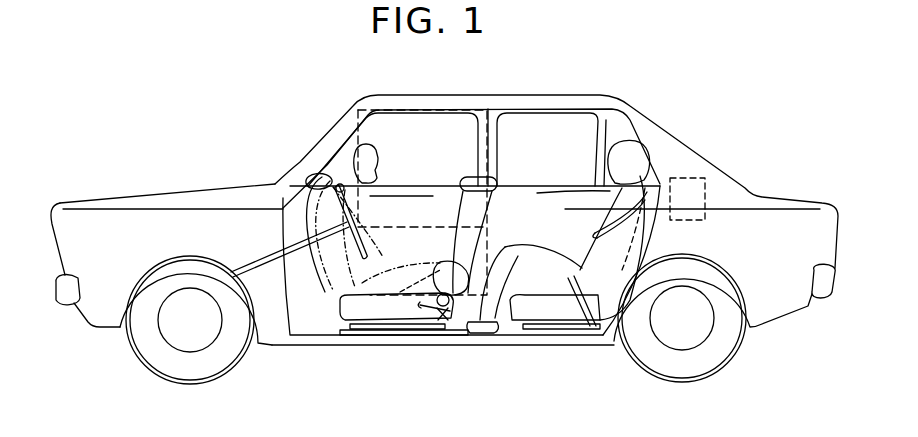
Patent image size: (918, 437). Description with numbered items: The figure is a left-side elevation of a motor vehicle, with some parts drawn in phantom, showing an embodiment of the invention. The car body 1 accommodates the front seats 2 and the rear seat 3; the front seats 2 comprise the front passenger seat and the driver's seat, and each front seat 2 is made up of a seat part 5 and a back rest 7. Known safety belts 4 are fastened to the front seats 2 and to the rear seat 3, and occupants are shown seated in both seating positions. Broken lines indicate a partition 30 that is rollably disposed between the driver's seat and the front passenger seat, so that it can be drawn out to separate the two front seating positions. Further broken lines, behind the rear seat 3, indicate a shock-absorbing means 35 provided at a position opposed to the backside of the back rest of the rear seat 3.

The car body 1 is at (683, 142).
The front seats 2 is at (415, 312).
The rear seat 3 is at (615, 336).
The safety belts 4 is at (597, 233).
The seat part 5 is at (410, 290).
The back rest 7 is at (462, 200).
The partition 30 is at (352, 120).
The shock-absorbing means 35 is at (705, 183).